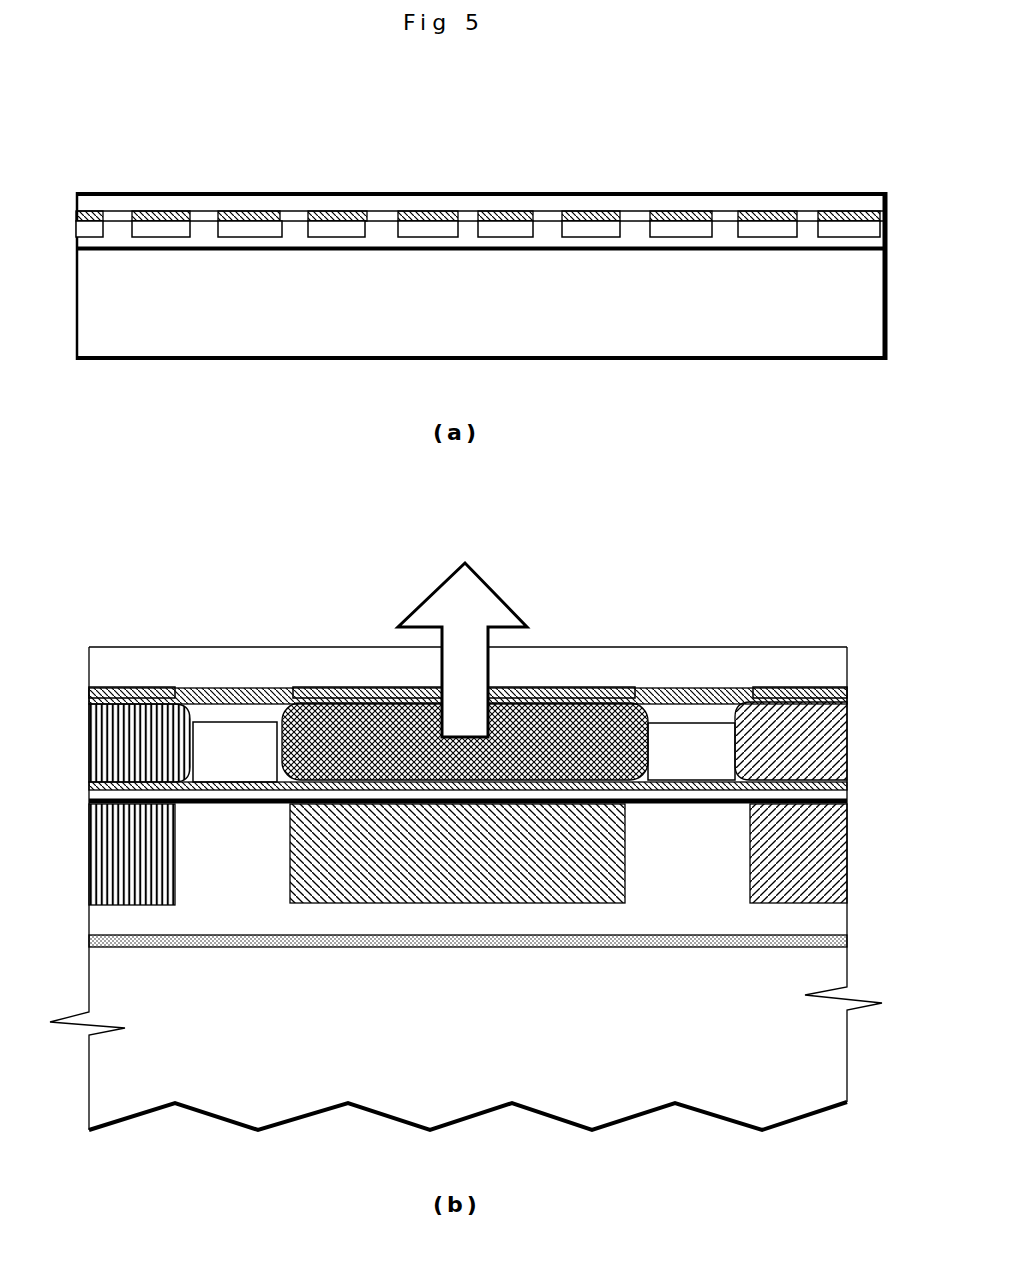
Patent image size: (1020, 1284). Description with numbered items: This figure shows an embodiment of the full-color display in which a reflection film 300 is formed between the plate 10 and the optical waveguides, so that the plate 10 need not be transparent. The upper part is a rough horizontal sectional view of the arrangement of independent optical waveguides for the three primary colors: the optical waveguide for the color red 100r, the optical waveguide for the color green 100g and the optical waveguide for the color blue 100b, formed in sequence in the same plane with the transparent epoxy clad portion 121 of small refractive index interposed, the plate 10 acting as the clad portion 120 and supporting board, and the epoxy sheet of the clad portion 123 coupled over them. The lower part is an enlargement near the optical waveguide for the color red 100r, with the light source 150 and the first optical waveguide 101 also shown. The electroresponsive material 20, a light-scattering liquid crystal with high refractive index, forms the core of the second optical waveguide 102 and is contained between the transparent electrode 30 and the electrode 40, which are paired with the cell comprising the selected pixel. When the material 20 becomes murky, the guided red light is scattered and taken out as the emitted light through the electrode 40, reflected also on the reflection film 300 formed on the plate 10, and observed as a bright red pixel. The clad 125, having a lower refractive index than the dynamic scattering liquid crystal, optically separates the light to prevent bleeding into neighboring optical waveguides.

The plate 10 is at (700, 293).
The electroresponsive material 20 is at (597, 697).
The transparent electrode 30 is at (210, 792).
The electrode 40 is at (300, 688).
The optical waveguide for the color red 100r is at (408, 228).
The optical waveguide for the color green 100g is at (323, 227).
The optical waveguide for the color blue 100b is at (510, 225).
The first optical waveguide 101 is at (437, 230).
The second optical waveguide 102 is at (345, 211).
The clad portion 120 is at (585, 240).
The clad portion 121 is at (553, 232).
The clad portion 123 is at (675, 200).
The clad portion 125 is at (205, 211).
The light source 150 is at (213, 690).
The reflection film 300 is at (235, 253).